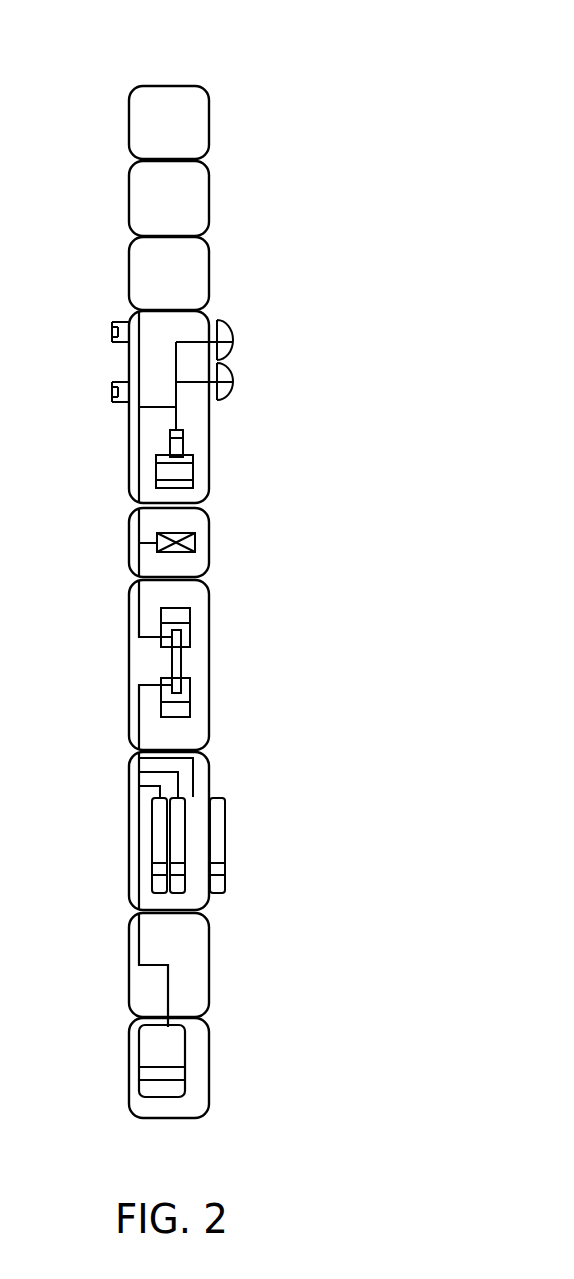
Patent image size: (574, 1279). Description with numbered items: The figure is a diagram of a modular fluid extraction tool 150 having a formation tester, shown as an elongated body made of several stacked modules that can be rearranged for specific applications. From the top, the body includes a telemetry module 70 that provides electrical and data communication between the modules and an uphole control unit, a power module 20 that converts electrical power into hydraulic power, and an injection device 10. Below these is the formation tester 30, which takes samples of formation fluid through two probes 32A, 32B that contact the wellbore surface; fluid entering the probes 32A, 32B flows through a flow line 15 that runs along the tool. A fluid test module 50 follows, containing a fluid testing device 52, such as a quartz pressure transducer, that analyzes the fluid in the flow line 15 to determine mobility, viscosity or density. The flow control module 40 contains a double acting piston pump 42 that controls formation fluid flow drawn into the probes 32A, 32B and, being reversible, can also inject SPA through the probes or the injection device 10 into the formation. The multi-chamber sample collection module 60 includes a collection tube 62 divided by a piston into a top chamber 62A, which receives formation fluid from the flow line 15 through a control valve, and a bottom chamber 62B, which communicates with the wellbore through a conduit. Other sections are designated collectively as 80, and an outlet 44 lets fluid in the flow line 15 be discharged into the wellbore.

The fluid extraction tool 150 is at (443, 52).
The telemetry module 70 is at (209, 117).
The power module 20 is at (209, 198).
The injection device 10 is at (209, 272).
The formation tester 30 is at (209, 455).
The flow line 15 is at (137, 447).
The probe 32A is at (233, 342).
The probe 32B is at (233, 382).
The fluid test module 50 is at (209, 543).
The fluid testing device 52 is at (156, 540).
The flow control module 40 is at (209, 675).
The double acting piston pump 42 is at (172, 664).
The multi-chamber sample collection module 60 is at (209, 785).
The collection tube 62 is at (218, 847).
The top chamber 62A is at (157, 826).
The bottom chamber 62B is at (157, 888).
The other sections 80 is at (209, 972).
The outlet 44 is at (137, 989).